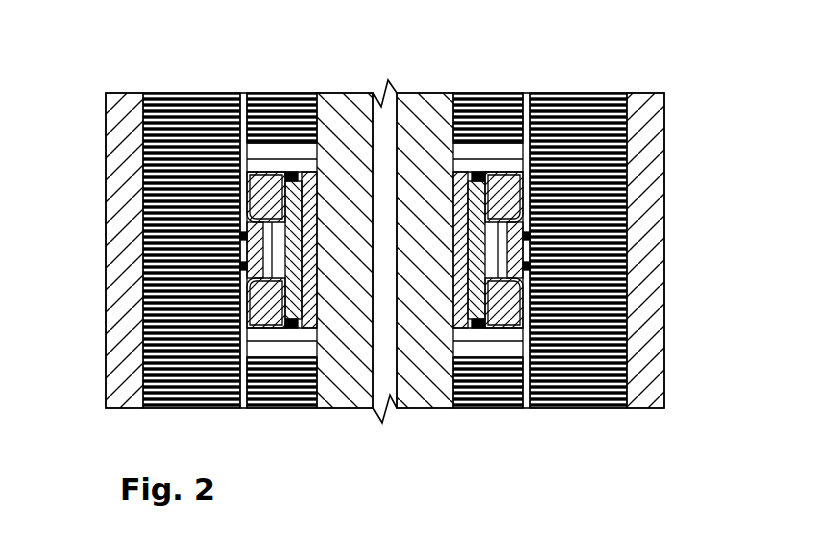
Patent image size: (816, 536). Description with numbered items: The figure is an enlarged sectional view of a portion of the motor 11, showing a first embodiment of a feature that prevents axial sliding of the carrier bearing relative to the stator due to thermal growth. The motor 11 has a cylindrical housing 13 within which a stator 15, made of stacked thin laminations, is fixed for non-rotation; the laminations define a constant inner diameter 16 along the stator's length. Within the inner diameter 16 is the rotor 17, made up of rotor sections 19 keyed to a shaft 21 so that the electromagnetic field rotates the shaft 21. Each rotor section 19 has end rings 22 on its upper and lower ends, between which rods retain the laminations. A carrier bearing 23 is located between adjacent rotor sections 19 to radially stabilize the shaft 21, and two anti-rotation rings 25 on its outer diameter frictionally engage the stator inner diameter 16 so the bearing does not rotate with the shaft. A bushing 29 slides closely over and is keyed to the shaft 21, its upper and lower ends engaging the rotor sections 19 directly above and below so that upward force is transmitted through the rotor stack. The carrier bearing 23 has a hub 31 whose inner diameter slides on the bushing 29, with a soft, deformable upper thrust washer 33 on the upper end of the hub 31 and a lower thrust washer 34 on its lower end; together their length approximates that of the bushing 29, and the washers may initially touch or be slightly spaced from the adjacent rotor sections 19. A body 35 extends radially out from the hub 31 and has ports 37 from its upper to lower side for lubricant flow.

The motor 11 is at (695, 103).
The housing 13 is at (664, 297).
The stator 15 is at (568, 108).
The inner diameter 16 is at (522, 110).
The rotor 17 is at (470, 413).
The rotor section 19 is at (266, 115).
The shaft 21 is at (348, 392).
The end ring 22 is at (503, 150).
The carrier bearing 23 is at (156, 189).
The anti-rotation ring 25 is at (533, 274).
The bushing 29 is at (310, 290).
The hub 31 is at (533, 300).
The upper thrust washer 33 is at (477, 172).
The lower thrust washer 34 is at (478, 330).
The body 35 is at (533, 246).
The port 37 is at (520, 178).